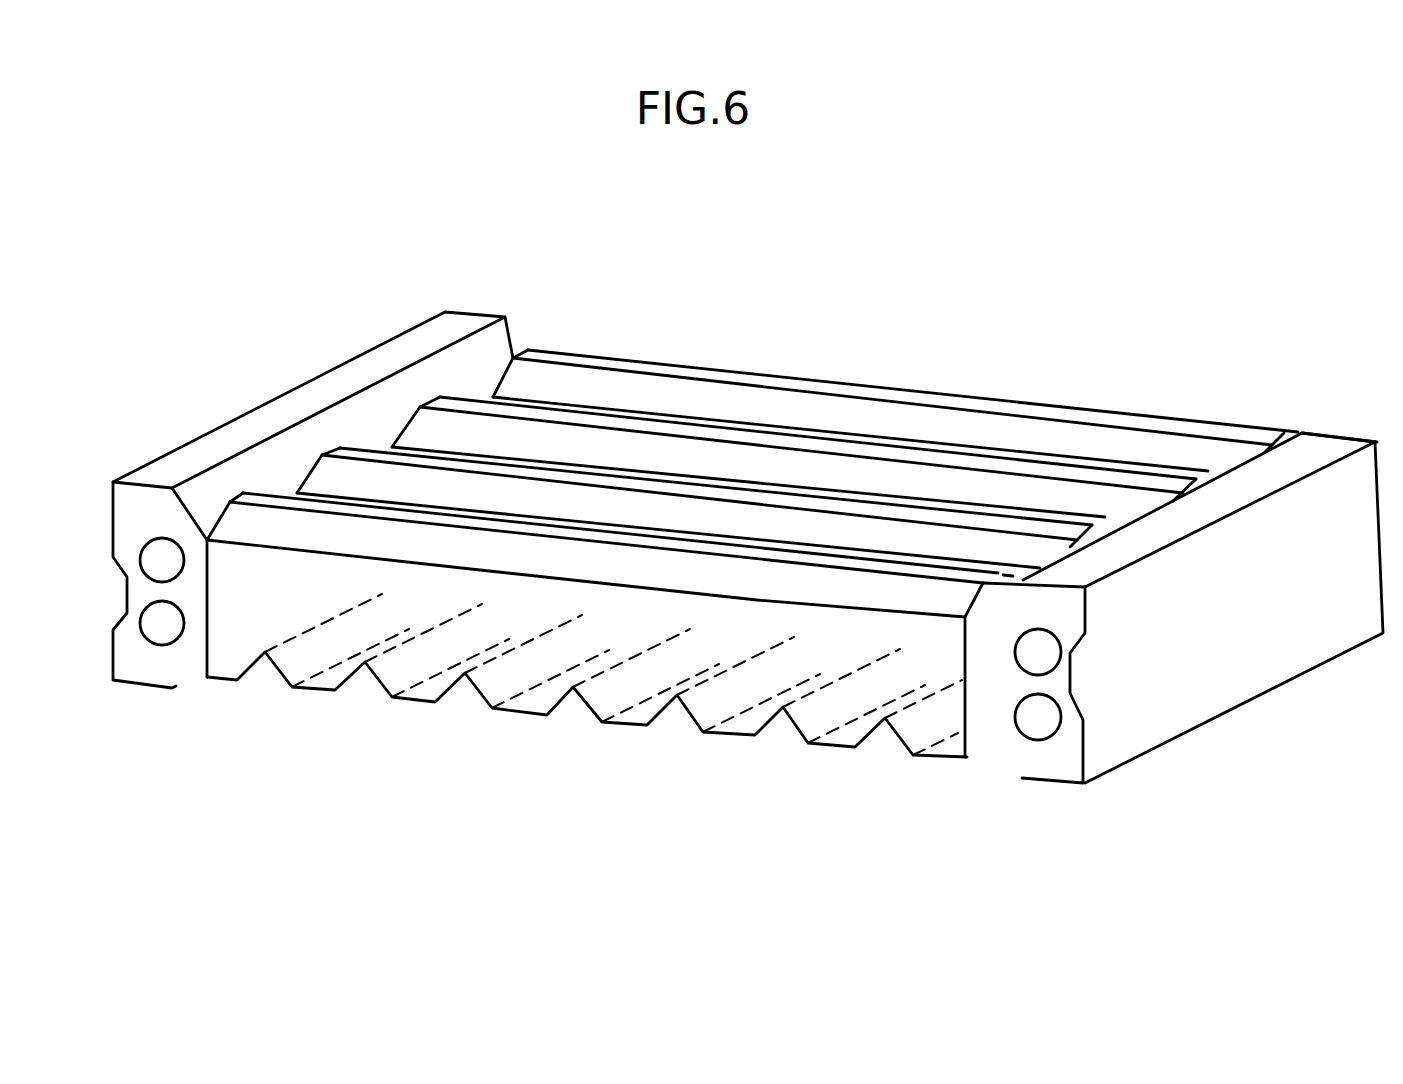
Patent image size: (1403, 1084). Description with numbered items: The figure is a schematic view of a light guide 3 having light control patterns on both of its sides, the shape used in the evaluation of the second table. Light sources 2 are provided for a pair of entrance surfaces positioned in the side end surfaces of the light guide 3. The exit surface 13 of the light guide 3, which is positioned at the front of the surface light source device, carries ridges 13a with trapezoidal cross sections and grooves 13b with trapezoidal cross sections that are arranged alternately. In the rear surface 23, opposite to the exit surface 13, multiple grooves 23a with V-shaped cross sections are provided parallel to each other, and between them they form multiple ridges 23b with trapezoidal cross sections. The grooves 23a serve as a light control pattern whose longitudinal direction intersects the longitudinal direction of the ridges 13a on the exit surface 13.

The light source 2 is at (150, 690).
The light guide 3 is at (237, 682).
The exit surface 13 is at (752, 422).
The ridge 13a is at (950, 457).
The groove 13b is at (883, 497).
The rear surface 23 is at (587, 744).
The groove 23a is at (687, 723).
The ridge 23b is at (613, 722).